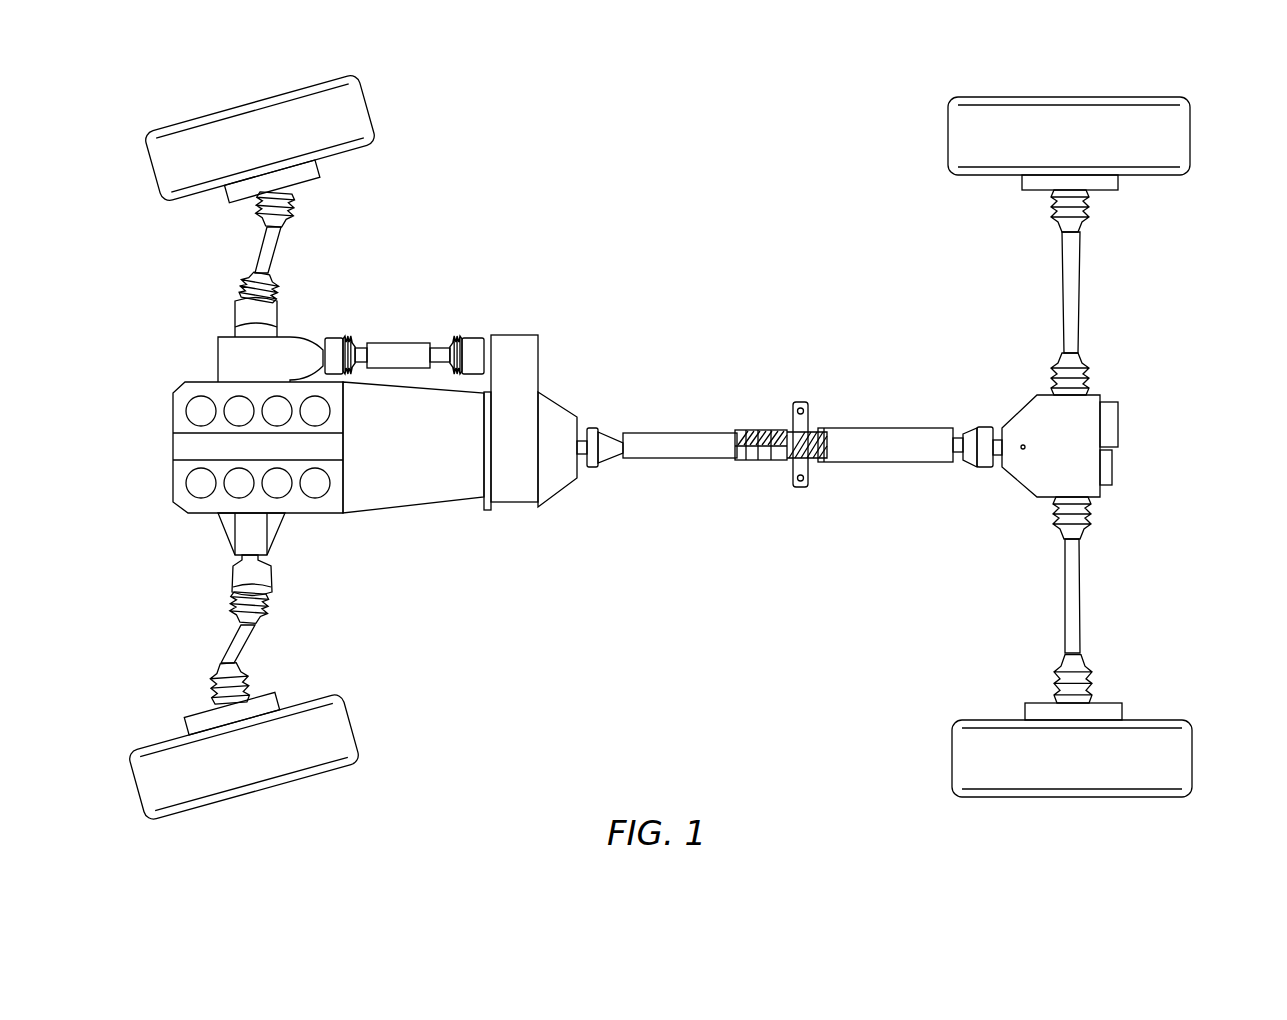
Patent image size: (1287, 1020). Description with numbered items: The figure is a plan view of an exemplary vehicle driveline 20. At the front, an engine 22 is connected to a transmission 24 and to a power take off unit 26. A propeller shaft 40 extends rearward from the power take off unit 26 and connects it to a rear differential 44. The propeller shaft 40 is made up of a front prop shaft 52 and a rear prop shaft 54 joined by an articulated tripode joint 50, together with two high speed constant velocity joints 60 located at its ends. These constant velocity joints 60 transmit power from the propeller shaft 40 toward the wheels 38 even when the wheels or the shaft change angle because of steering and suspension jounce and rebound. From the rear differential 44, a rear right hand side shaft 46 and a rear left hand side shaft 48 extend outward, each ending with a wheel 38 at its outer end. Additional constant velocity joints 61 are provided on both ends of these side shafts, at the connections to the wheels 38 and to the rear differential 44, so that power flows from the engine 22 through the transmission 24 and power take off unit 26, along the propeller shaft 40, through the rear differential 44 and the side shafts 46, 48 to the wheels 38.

The driveline 20 is at (670, 262).
The engine 22 is at (192, 443).
The transmission 24 is at (412, 492).
The power take off unit 26 is at (515, 492).
The wheel 38 is at (1167, 142).
The propeller shaft 40 is at (735, 368).
The rear differential 44 is at (1077, 455).
The rear right hand side shaft 46 is at (1068, 273).
The rear left hand side shaft 48 is at (1068, 610).
The articulated tripode joint 50 is at (758, 418).
The front prop shaft 52 is at (695, 464).
The rear prop shaft 54 is at (865, 437).
The high speed constant velocity joint 60 is at (612, 415).
The constant velocity joint 61 is at (1087, 215).